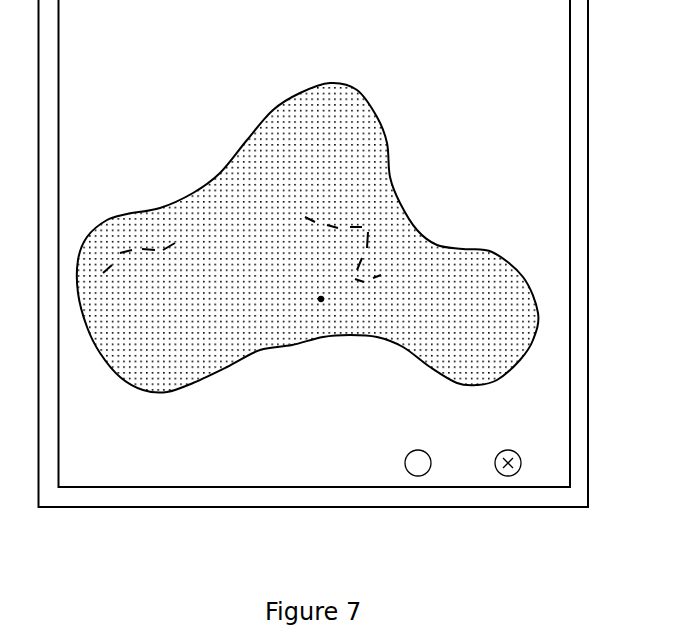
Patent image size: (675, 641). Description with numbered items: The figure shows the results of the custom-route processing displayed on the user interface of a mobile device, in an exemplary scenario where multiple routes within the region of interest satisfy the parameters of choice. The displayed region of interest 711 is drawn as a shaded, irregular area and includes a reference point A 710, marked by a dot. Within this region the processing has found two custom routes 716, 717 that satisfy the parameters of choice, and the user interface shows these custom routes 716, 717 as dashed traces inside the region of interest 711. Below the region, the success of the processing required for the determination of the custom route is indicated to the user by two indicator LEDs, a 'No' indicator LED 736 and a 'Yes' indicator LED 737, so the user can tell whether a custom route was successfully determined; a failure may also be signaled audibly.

The region of interest 711 is at (308, 223).
The custom route 717 is at (142, 212).
The custom route 716 is at (414, 221).
The reference point A 710 is at (330, 357).
The indicator LED 'No' 736 is at (446, 499).
The indicator LED 'Yes' 737 is at (537, 499).